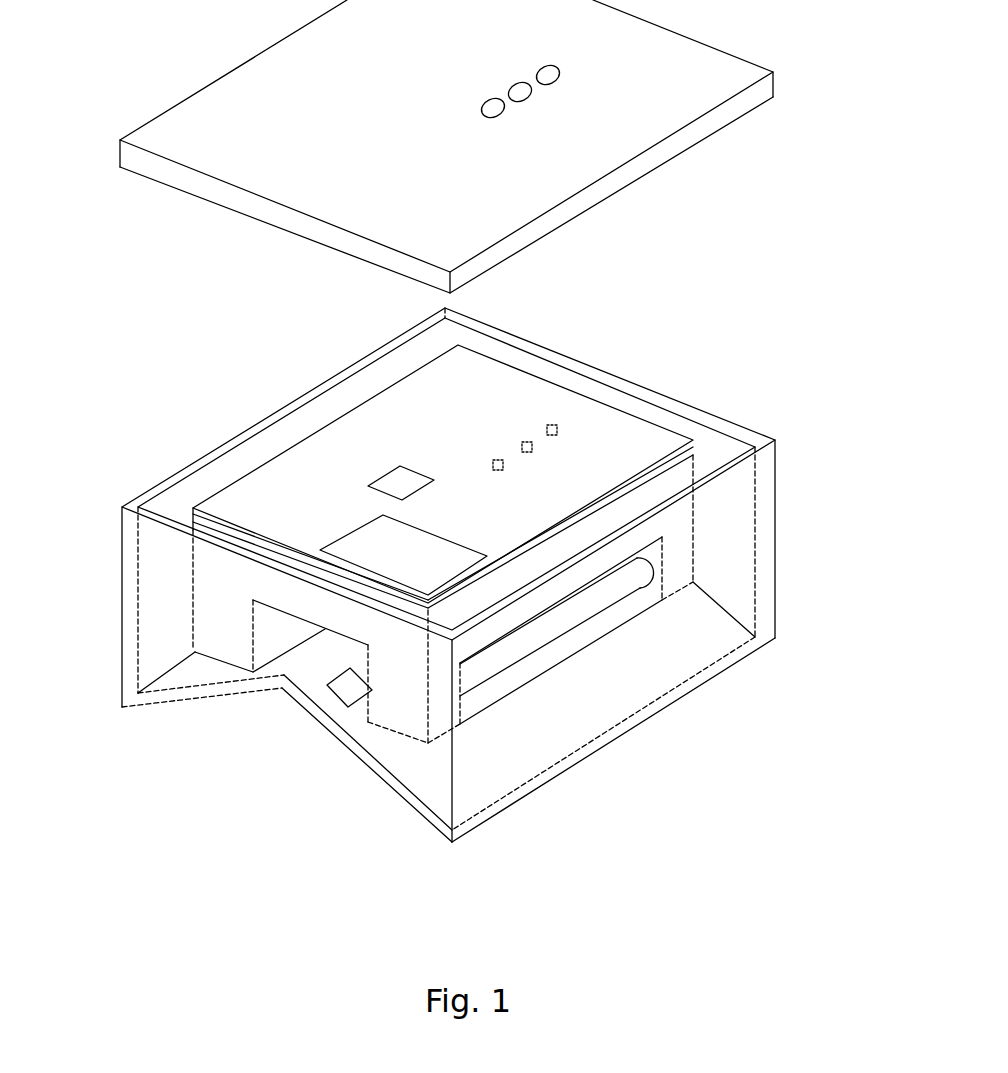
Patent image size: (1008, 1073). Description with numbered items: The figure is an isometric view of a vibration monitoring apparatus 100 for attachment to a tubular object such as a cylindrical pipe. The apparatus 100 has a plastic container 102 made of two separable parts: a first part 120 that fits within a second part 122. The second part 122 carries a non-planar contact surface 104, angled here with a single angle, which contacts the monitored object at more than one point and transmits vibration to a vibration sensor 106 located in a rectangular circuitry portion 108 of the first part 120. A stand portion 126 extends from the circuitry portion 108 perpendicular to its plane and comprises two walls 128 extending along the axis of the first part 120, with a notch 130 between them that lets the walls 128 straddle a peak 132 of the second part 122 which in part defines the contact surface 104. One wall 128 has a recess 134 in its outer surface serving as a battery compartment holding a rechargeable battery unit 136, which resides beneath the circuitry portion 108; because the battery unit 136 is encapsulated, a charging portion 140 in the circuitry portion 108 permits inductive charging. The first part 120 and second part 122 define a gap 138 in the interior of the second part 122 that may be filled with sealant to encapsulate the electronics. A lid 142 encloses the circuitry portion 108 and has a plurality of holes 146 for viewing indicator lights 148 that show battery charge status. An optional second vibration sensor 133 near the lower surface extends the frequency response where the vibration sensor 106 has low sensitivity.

The vibration monitoring apparatus 100 is at (762, 256).
The container 102 is at (460, 564).
The non-planar contact surface 104 is at (244, 720).
The vibration sensor 106 is at (398, 464).
The circuitry portion 108 is at (471, 587).
The first part 120 is at (663, 433).
The second part 122 is at (775, 505).
The stand portion 126 is at (463, 723).
The walls 128 is at (205, 623).
The notch 130 is at (312, 681).
The peak 132 is at (287, 677).
The second vibration sensor 133 is at (352, 699).
The recess 134 is at (631, 628).
The battery unit 136 is at (570, 635).
The gap 138 is at (534, 356).
The charging portion 140 is at (442, 533).
The lid 142 is at (745, 103).
The holes 146 is at (510, 88).
The indicator lights 148 is at (546, 427).